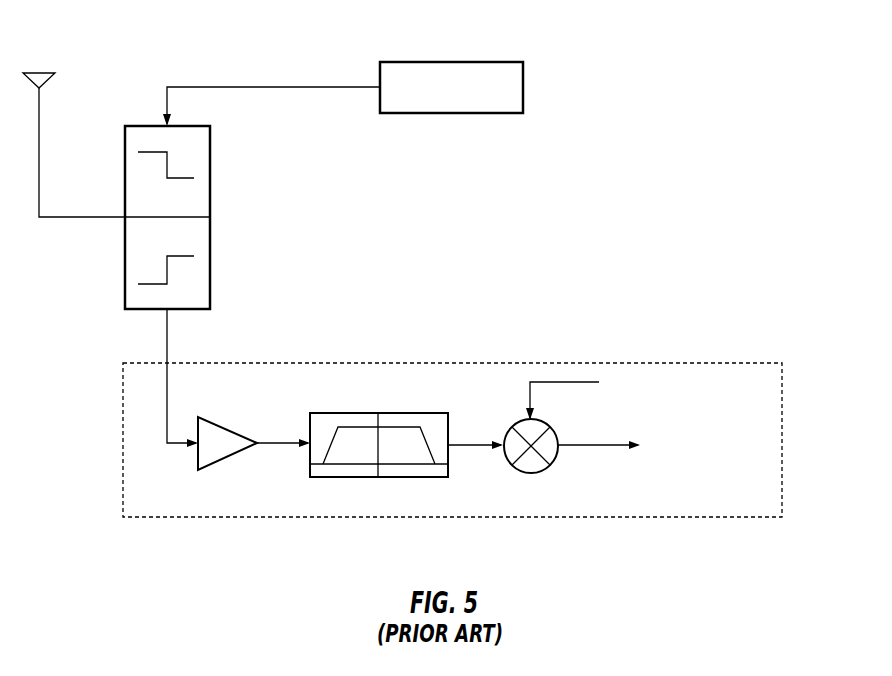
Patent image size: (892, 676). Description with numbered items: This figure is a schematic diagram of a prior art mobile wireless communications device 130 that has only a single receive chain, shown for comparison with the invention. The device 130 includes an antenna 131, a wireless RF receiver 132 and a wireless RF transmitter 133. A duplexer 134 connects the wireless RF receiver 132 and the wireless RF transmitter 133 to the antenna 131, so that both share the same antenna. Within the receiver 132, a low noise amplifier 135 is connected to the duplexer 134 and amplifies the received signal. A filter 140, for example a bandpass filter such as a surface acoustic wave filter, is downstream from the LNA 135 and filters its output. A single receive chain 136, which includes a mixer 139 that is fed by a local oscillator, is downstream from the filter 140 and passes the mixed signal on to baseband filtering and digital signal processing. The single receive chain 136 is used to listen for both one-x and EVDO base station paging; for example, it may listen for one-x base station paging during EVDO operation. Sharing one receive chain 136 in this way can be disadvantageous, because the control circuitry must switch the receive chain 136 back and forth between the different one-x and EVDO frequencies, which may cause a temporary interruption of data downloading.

The mobile wireless communications device 130 is at (664, 50).
The antenna 131 is at (52, 75).
The wireless radio frequency receiver 132 is at (703, 362).
The wireless RF transmitter 133 is at (523, 85).
The duplexer 134 is at (210, 178).
The low noise amplifier 135 is at (220, 423).
The single receive chain 136 is at (554, 485).
The mixer 139 is at (522, 420).
The filter 140 is at (393, 413).